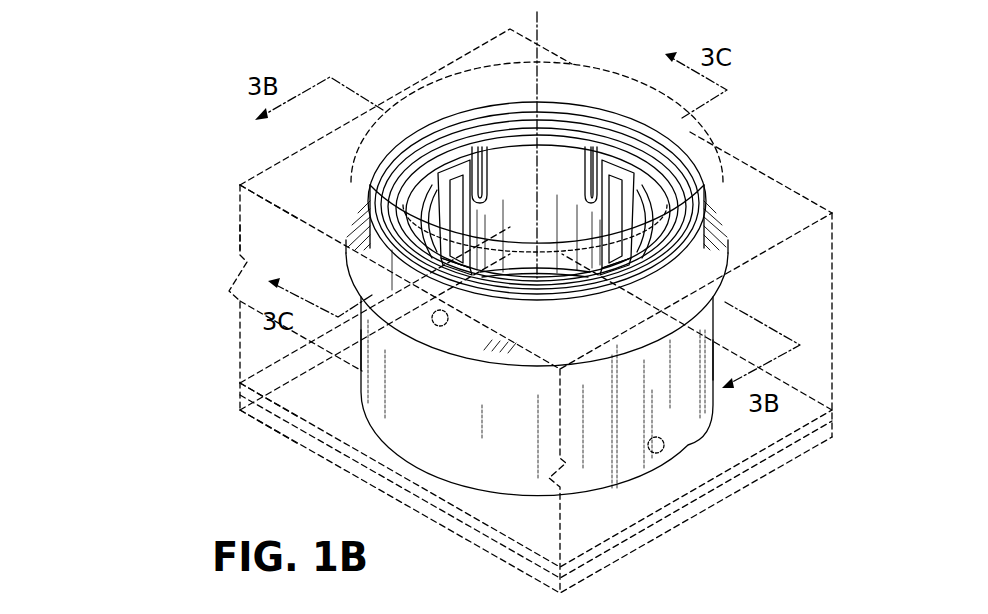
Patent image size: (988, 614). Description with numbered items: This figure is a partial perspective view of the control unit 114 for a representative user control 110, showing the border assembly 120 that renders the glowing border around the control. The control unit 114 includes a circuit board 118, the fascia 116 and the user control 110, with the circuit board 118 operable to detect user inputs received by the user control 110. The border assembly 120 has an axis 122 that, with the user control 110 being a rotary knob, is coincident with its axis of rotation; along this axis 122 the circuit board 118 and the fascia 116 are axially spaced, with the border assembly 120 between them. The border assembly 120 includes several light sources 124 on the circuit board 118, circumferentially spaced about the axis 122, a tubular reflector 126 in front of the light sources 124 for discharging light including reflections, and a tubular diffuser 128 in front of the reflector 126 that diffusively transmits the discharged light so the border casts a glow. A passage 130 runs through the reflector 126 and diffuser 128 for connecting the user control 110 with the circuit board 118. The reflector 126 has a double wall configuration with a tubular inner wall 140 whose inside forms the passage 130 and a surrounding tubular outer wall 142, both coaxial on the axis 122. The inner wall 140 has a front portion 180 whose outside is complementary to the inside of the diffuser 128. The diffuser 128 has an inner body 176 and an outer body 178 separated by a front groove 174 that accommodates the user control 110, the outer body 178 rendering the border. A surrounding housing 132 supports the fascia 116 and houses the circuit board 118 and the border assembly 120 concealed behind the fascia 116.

The user control 110 is at (383, 155).
The fascia 116 is at (240, 193).
The tubular diffuser 128 is at (375, 252).
The control unit 114 is at (240, 240).
The light sources 124 is at (380, 300).
The border assembly 120 is at (359, 364).
The tubular reflector 126 is at (362, 395).
The circuit board 118 is at (240, 392).
The housing 132 is at (240, 408).
The axis 122 is at (537, 28).
The passage 130 is at (520, 177).
The front portion 180 is at (640, 152).
The tubular inner wall 140 is at (570, 187).
The inner body 176 is at (690, 200).
The front groove 174 is at (680, 213).
The outer body 178 is at (700, 238).
The tubular outer wall 142 is at (712, 333).